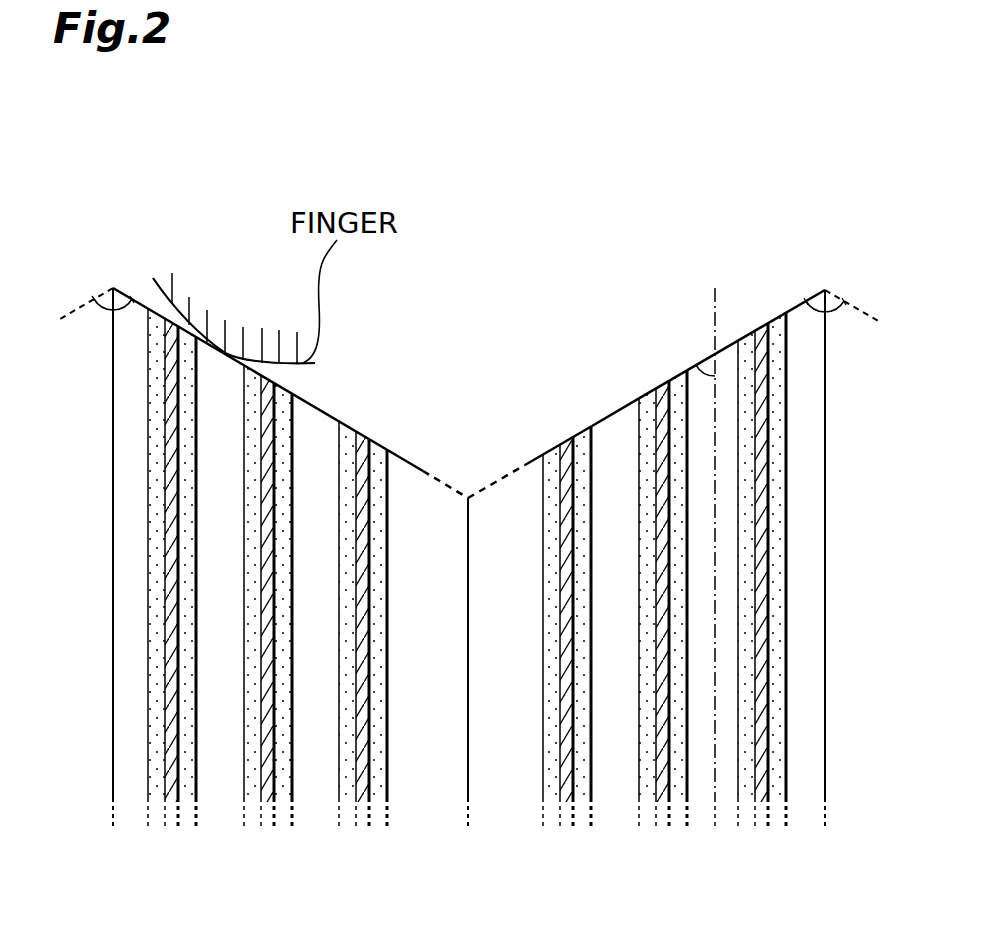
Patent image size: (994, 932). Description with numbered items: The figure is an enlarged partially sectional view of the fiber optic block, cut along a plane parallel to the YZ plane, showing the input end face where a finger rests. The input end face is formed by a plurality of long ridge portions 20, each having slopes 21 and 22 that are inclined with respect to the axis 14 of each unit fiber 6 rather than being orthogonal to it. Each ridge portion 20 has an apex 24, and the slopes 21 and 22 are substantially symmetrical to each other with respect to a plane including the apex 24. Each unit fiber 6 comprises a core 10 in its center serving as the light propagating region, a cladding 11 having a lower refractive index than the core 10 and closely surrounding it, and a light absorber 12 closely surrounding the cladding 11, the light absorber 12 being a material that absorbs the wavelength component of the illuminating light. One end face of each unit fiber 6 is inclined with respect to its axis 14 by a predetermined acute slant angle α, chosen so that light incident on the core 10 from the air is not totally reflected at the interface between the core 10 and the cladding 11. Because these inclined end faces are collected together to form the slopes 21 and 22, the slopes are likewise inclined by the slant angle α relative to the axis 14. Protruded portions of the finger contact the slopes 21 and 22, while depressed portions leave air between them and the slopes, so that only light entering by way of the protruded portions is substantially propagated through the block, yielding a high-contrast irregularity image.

The unit fiber 6 is at (467, 574).
The core 10 is at (620, 410).
The cladding 11 is at (586, 428).
The light absorber 12 is at (568, 440).
The axis 14 is at (718, 303).
The ridge portion 20 is at (104, 281).
The slope 21 is at (646, 394).
The slope 22 is at (414, 465).
The apex 24 is at (113, 288).